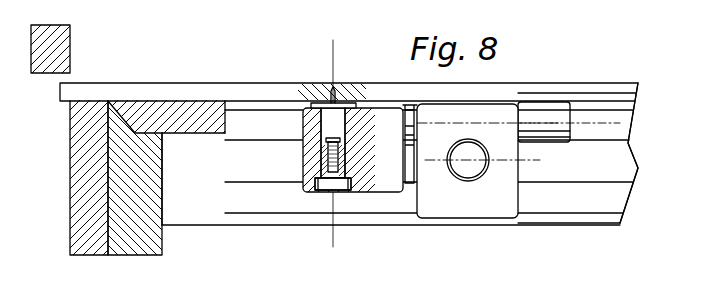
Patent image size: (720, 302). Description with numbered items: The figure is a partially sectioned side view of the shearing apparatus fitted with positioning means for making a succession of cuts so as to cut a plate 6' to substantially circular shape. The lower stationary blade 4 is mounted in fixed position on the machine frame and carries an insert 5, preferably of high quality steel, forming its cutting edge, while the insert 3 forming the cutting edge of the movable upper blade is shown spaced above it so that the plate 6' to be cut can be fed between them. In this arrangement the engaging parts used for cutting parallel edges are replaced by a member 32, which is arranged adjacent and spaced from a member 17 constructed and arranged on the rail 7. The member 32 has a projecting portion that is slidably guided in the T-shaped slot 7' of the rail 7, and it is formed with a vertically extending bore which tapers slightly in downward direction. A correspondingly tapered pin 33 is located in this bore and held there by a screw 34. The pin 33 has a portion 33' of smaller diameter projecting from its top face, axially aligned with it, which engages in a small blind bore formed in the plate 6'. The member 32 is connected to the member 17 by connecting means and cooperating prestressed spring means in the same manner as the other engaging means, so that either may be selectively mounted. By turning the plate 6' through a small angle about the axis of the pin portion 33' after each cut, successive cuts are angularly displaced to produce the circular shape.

The insert 3 is at (43, 70).
The lower stationary blade 4 is at (145, 222).
The insert 5 is at (80, 240).
The plate 6' is at (349, 171).
The rail 7 is at (577, 184).
The T-shaped slot 7' is at (650, 153).
The member 17 is at (473, 203).
The member 32 is at (390, 155).
The tapered pin 33 is at (322, 160).
The pin portion 33' is at (359, 78).
The screw 34 is at (330, 192).